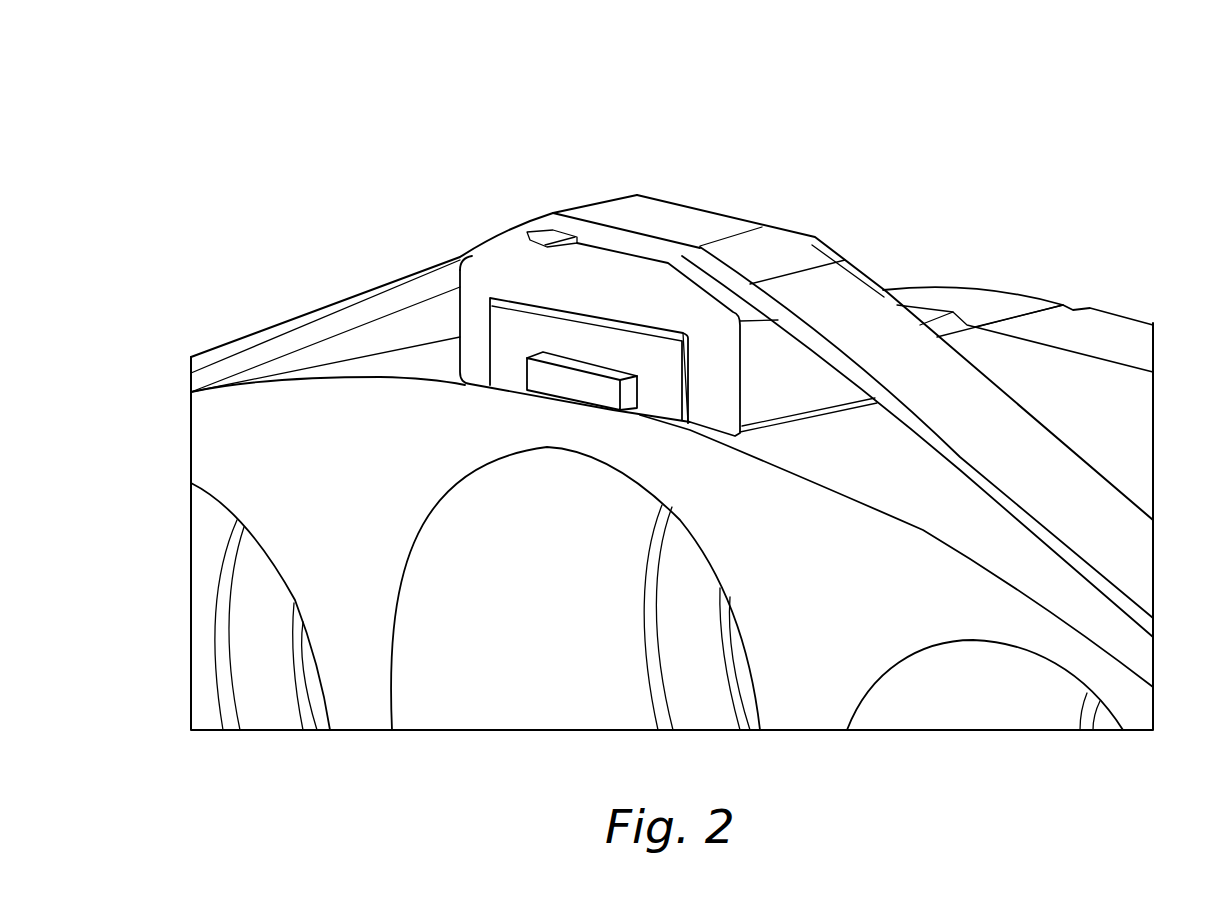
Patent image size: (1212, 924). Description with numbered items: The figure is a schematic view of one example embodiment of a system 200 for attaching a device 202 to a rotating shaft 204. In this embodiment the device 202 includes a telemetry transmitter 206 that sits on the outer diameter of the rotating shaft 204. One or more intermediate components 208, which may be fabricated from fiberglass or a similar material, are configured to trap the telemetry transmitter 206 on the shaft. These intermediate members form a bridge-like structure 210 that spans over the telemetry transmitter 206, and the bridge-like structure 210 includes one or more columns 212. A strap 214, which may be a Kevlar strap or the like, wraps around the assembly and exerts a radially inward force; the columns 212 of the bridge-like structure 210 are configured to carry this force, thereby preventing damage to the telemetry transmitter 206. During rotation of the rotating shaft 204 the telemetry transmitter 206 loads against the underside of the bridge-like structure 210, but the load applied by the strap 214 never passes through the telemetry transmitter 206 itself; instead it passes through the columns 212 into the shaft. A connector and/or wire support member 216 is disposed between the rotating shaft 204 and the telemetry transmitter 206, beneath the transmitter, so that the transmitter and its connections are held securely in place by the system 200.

The system 200 is at (1133, 45).
The device 202 is at (673, 398).
The rotating shaft 204 is at (988, 310).
The telemetry transmitter 206 is at (507, 367).
The intermediate components 208 is at (807, 400).
The bridge-like structure 210 is at (507, 267).
The columns 212 is at (473, 337).
The strap 214 is at (1033, 465).
The connector and/or wire support member 216 is at (570, 387).